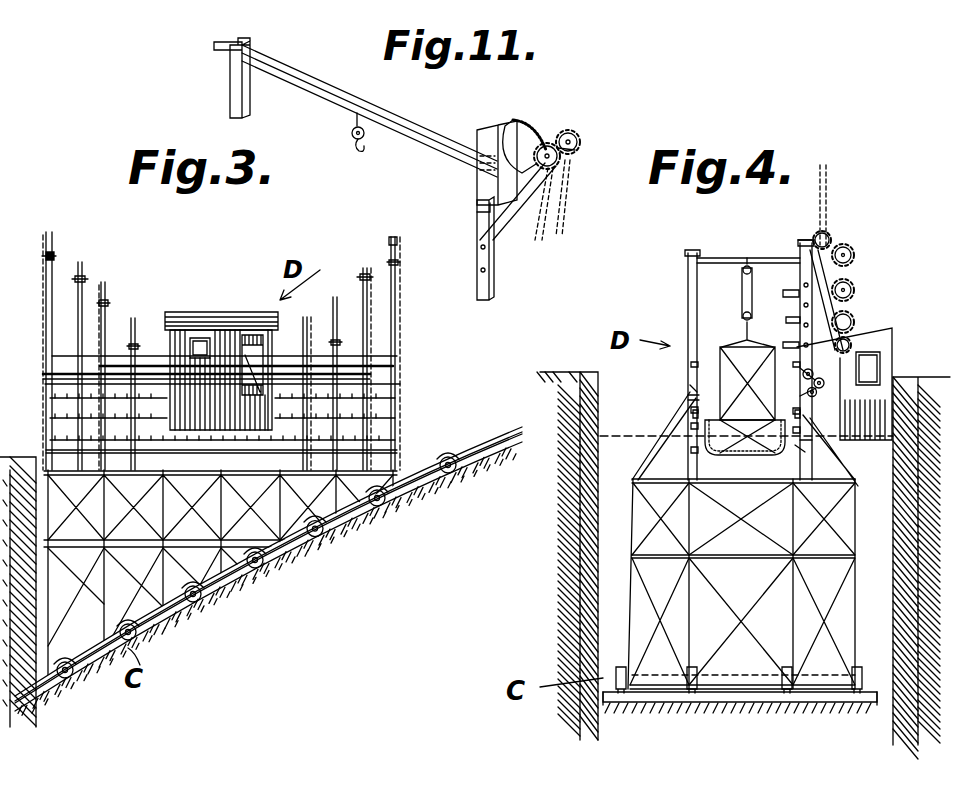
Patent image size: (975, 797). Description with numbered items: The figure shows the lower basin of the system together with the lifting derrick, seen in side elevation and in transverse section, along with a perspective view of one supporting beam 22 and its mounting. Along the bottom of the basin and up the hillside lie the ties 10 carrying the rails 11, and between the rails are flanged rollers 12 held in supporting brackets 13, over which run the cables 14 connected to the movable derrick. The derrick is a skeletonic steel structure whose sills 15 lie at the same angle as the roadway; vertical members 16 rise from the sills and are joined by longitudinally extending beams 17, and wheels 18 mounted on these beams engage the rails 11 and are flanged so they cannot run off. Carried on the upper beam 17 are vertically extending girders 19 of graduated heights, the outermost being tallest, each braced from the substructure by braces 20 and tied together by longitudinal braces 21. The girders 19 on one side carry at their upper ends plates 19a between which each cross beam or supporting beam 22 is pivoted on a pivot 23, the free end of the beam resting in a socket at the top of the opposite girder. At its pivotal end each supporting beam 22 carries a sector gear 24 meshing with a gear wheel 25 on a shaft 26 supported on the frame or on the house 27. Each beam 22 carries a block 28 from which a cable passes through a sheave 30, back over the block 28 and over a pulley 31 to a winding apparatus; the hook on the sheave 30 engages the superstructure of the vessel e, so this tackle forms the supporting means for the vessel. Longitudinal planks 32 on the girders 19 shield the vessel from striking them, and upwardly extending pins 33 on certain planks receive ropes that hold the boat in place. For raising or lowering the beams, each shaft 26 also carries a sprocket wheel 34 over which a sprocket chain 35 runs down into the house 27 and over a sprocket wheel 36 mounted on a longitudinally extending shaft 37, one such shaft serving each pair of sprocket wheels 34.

In FIG. 3, the ties 10 is at (185, 622).
In FIG. 4, the ties 10 is at (632, 698).
In FIG. 3, the rails 11 is at (258, 590).
In FIG. 4, the rails 11 is at (700, 705).
In FIG. 3, the flanged rollers 12 is at (452, 460).
In FIG. 3, the supporting brackets 13 is at (457, 475).
In FIG. 3, the cables 14 is at (497, 437).
In FIG. 3, the sills 15 is at (312, 556).
In FIG. 3, the vertical members 16 is at (103, 518).
In FIG. 4, the vertical members 16 is at (630, 532).
In FIG. 3, the longitudinally extending beams 17 is at (208, 478).
In FIG. 3, the wheels 18 is at (222, 607).
In FIG. 4, the wheels 18 is at (618, 670).
In FIG. 11, the girders 19 is at (231, 82).
In FIG. 3, the girders 19 is at (78, 308).
In FIG. 4, the girders 19 is at (688, 300).
In FIG. 11, the plates 19a is at (477, 145).
In FIG. 3, the plates 19a is at (398, 241).
In FIG. 4, the plates 19a is at (810, 247).
In FIG. 4, the braces 20 is at (675, 413).
In FIG. 3, the longitudinal braces 21 is at (73, 348).
In FIG. 11, the supporting beam 22 is at (318, 94).
In FIG. 4, the supporting beam 22 is at (712, 262).
In FIG. 11, the pivot 23 is at (484, 180).
In FIG. 4, the pivot 23 is at (818, 258).
In FIG. 11, the sector gear 24 is at (524, 120).
In FIG. 4, the sector gear 24 is at (843, 250).
In FIG. 11, the gear wheel 25 is at (560, 162).
In FIG. 4, the gear wheel 25 is at (854, 257).
In FIG. 11, the shaft 26 is at (581, 137).
In FIG. 3, the shaft 26 is at (138, 326).
In FIG. 4, the shaft 26 is at (852, 280).
In FIG. 3, the house 27 is at (203, 332).
In FIG. 4, the house 27 is at (733, 487).
In FIG. 11, the block 28 is at (356, 140).
In FIG. 4, the block 28 is at (743, 270).
In FIG. 3, the sheave 30 is at (60, 374).
In FIG. 4, the sheave 30 is at (749, 326).
In FIG. 3, the pulley 31 is at (54, 256).
In FIG. 3, the planks 32 is at (146, 445).
In FIG. 4, the planks 32 is at (697, 410).
In FIG. 3, the pins 33 is at (140, 403).
In FIG. 4, the pins 33 is at (687, 400).
In FIG. 11, the sprocket wheel 34 is at (581, 152).
In FIG. 3, the sprocket wheel 34 is at (78, 280).
In FIG. 11, the sprocket chain 35 is at (566, 238).
In FIG. 3, the sprocket chain 35 is at (45, 318).
In FIG. 4, the sprocket chain 35 is at (855, 304).
In FIG. 4, the sprocket wheel 36 is at (824, 368).
In FIG. 4, the longitudinally extending shaft 37 is at (812, 270).
In FIG. 4, the vessel e is at (770, 370).